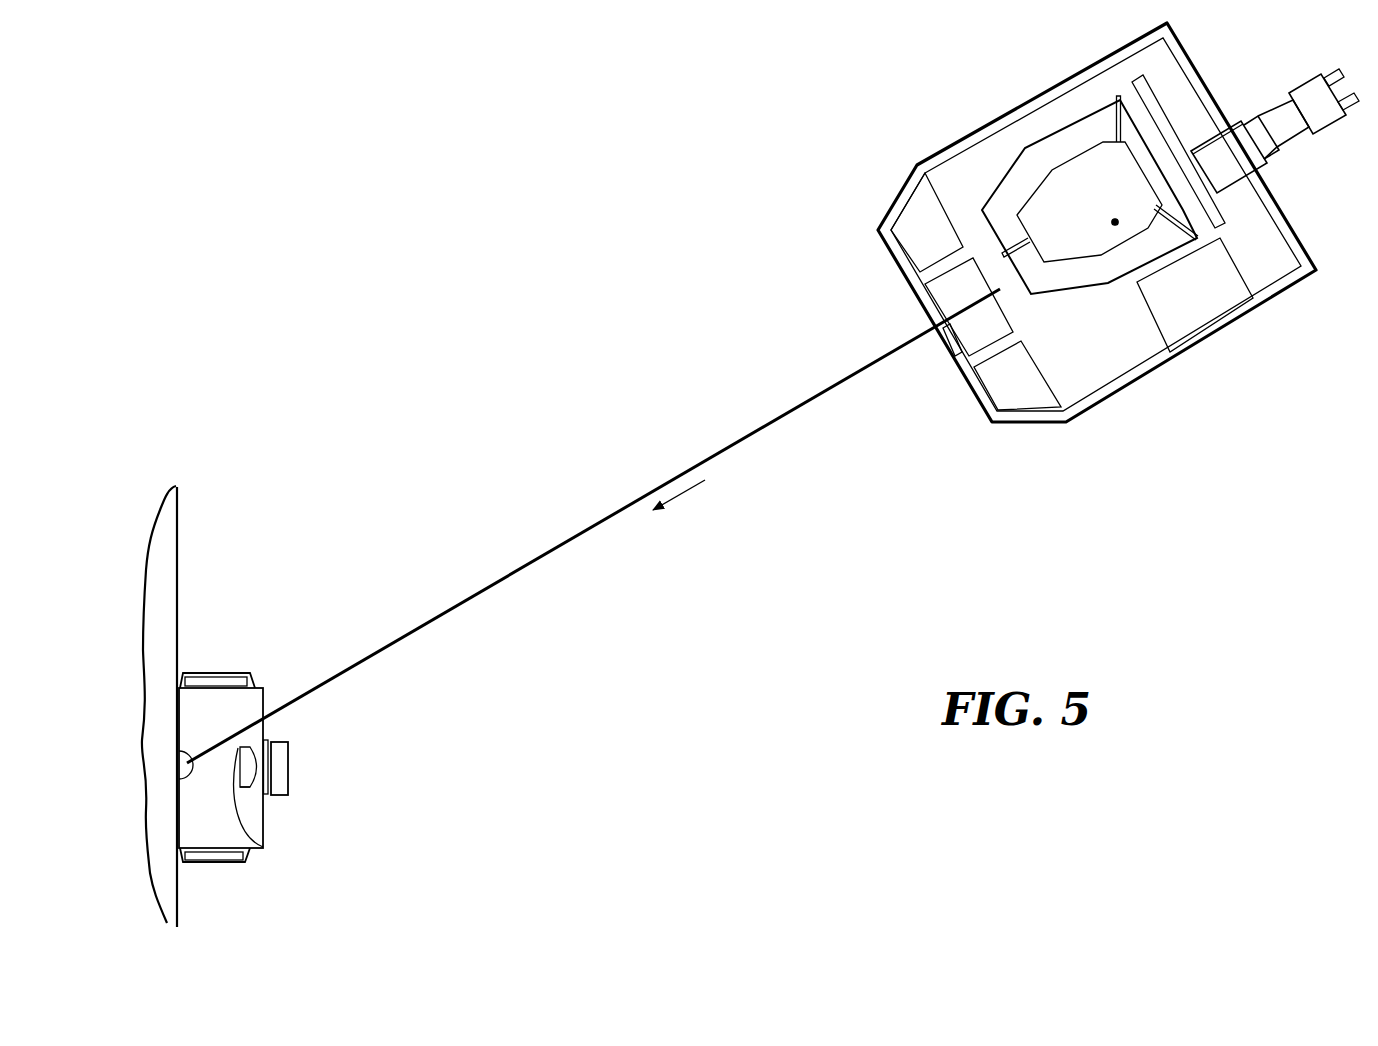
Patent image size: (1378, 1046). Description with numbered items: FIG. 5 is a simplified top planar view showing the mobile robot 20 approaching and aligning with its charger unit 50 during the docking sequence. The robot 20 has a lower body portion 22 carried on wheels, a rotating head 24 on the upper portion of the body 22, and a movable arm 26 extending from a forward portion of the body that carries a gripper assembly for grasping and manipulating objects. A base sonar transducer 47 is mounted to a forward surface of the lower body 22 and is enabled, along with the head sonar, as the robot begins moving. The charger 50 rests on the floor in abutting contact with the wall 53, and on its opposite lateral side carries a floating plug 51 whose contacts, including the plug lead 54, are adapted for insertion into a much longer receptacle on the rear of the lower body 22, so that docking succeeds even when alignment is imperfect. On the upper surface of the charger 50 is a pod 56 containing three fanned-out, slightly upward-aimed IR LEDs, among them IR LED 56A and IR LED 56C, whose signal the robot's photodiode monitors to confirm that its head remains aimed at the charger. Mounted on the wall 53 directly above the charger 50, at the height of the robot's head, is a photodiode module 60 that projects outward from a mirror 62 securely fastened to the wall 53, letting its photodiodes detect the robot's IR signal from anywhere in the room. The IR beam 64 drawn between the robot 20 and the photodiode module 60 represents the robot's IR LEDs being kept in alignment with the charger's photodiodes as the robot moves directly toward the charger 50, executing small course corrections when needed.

The mobile robot 20 is at (957, 140).
The lower body portion 22 is at (894, 204).
The rotating head 24 is at (1072, 124).
The movable arm 26 is at (1255, 95).
The transducer 47 is at (952, 346).
The IR beam 64 is at (588, 530).
The wall 53 is at (180, 524).
The mirror 62 is at (183, 723).
The charger unit 50 is at (208, 867).
The photodiode module 60 is at (188, 782).
The pod 56 is at (264, 848).
The IR LED 56C is at (256, 749).
The IR LED 56A is at (256, 788).
The plug lead 54 is at (288, 737).
The floating plug 51 is at (292, 768).